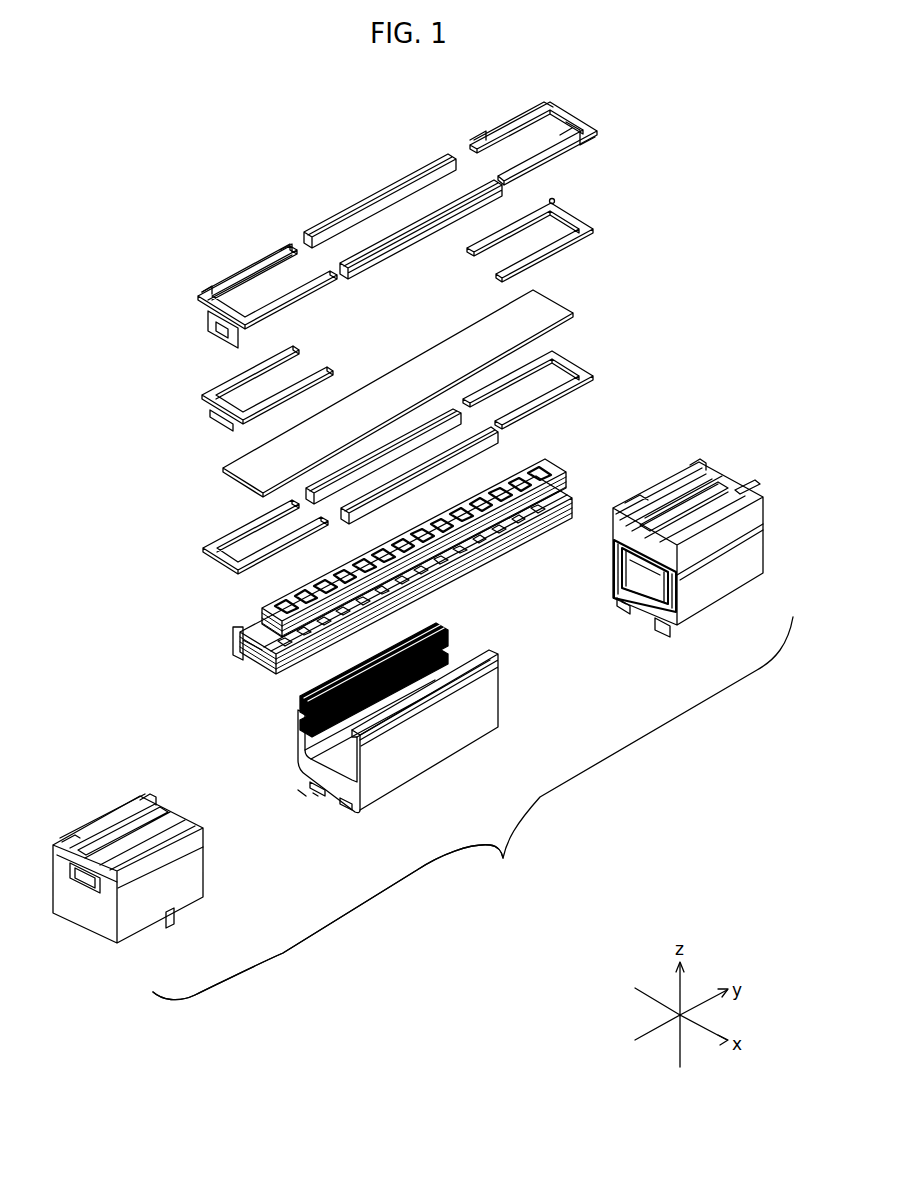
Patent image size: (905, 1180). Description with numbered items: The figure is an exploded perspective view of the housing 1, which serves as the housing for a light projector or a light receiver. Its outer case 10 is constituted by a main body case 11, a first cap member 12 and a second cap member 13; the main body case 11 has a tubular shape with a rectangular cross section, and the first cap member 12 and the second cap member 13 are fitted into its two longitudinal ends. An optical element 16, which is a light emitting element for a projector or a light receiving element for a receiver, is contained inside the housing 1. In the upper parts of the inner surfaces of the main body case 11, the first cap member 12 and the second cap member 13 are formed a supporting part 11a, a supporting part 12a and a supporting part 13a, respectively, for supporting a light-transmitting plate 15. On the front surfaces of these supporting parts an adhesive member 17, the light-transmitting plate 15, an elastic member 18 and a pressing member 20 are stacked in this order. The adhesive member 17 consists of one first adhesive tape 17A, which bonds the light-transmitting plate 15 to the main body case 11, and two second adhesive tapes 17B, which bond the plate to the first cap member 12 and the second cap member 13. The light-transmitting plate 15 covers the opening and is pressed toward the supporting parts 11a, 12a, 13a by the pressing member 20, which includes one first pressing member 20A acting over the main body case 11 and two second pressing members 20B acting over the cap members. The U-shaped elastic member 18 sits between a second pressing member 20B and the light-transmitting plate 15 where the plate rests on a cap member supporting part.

The housing 1 is at (136, 110).
The outer case 10 is at (473, 808).
The main body case 11 is at (440, 773).
The supporting part 11a is at (300, 712).
The first cap member 12 is at (183, 922).
The supporting part 12a is at (105, 833).
The second cap member 13 is at (727, 597).
The supporting part 13a is at (692, 506).
The light-transmitting plate 15 is at (555, 300).
The optical element 16 is at (558, 480).
The adhesive member 17 is at (580, 360).
The first adhesive tape 17A is at (447, 466).
The second adhesive tapes 17B is at (562, 397).
The elastic member 18 is at (580, 208).
The pressing member 20 is at (580, 113).
The first pressing member 20A is at (346, 212).
The second pressing members 20B is at (497, 131).